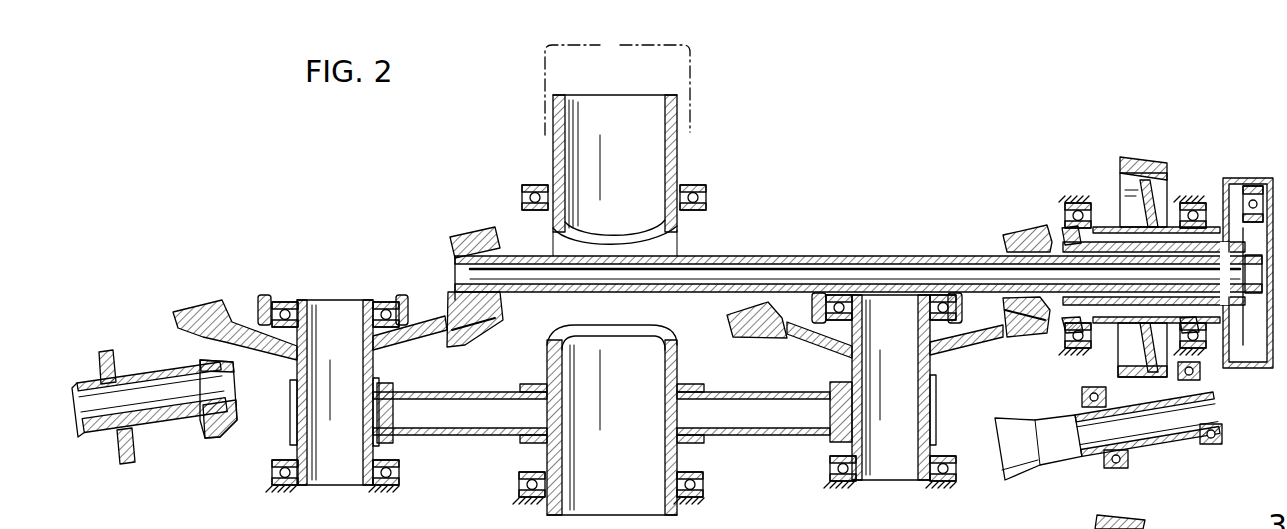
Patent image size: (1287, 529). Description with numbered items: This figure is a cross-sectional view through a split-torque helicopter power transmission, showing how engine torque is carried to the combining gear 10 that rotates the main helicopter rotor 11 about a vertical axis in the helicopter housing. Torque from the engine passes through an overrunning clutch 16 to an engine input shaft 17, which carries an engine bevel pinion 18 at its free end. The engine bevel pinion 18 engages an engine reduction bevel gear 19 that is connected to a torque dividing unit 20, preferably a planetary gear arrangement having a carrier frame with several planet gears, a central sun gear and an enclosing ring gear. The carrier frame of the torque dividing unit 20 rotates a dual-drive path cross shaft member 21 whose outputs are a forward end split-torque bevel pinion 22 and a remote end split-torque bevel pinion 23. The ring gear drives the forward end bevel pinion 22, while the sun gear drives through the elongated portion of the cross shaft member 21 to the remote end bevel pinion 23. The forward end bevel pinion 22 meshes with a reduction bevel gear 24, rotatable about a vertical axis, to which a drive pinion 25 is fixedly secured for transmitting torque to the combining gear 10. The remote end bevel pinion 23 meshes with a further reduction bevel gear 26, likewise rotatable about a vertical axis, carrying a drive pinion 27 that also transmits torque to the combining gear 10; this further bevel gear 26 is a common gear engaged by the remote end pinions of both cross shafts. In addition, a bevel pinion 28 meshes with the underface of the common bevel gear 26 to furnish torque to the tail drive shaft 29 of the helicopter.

The combining gear 10 is at (828, 443).
The main helicopter rotor 11 is at (678, 175).
The overrunning clutch 16 is at (1028, 467).
The engine input shaft 17 is at (1052, 425).
The engine bevel pinion 18 is at (1160, 452).
The engine reduction bevel gear 19 is at (1127, 157).
The torque dividing unit 20 is at (1233, 172).
The dual-drive path cross shaft member 21 is at (879, 253).
The forward end split-torque bevel pinion 22 is at (1015, 235).
The remote end split-torque bevel pinion 23 is at (472, 230).
The reduction bevel gear 24 is at (1027, 333).
The drive pinion 25 is at (936, 422).
The further reduction bevel gear 26 is at (480, 338).
The drive pinion 27 is at (285, 430).
The bevel pinion 28 is at (213, 438).
The tail drive shaft 29 is at (160, 365).